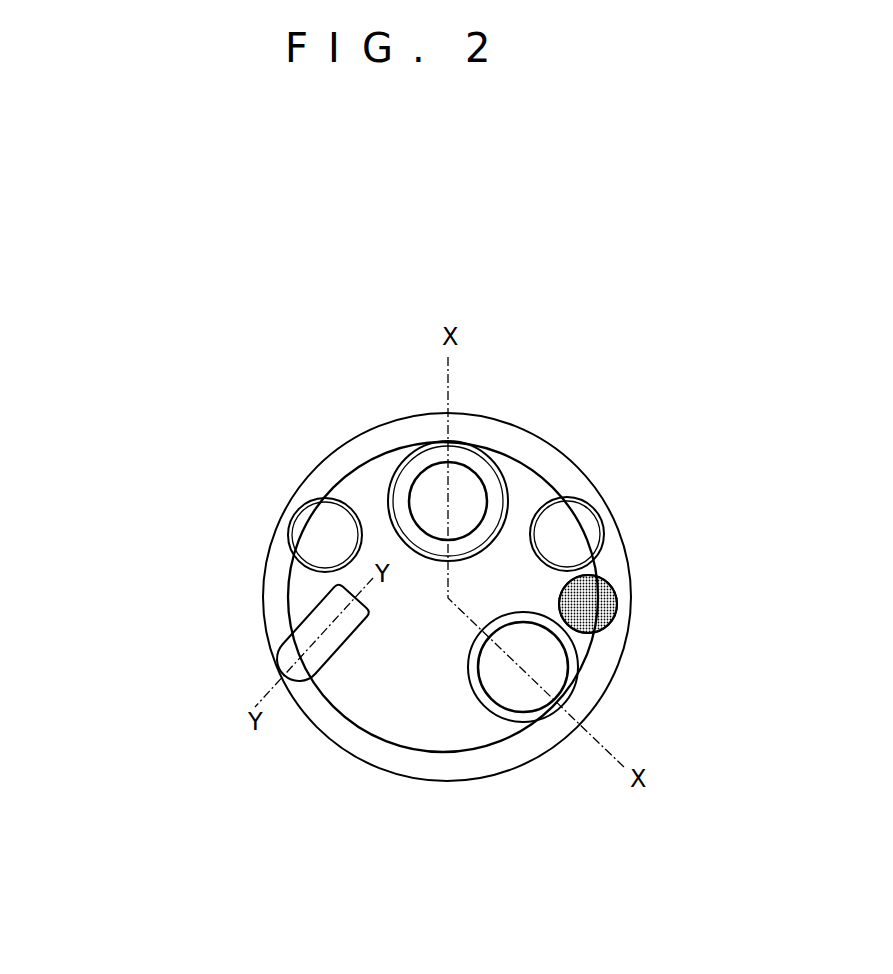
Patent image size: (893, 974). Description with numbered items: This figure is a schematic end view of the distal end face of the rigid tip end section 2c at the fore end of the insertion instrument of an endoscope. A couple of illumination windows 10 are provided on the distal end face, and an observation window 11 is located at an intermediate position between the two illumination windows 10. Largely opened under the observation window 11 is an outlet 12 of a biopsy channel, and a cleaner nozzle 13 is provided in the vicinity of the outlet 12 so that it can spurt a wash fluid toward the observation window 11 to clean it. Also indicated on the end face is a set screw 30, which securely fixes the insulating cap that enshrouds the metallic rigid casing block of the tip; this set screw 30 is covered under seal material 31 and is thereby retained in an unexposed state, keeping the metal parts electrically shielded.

The rigid tip end section 2c is at (560, 437).
The illumination window 10 is at (310, 516).
The observation window 11 is at (428, 487).
The outlet of biopsy channel 12 is at (500, 685).
The cleaner nozzle 13 is at (290, 640).
The set screw 30 is at (617, 593).
The seal material 31 is at (600, 630).